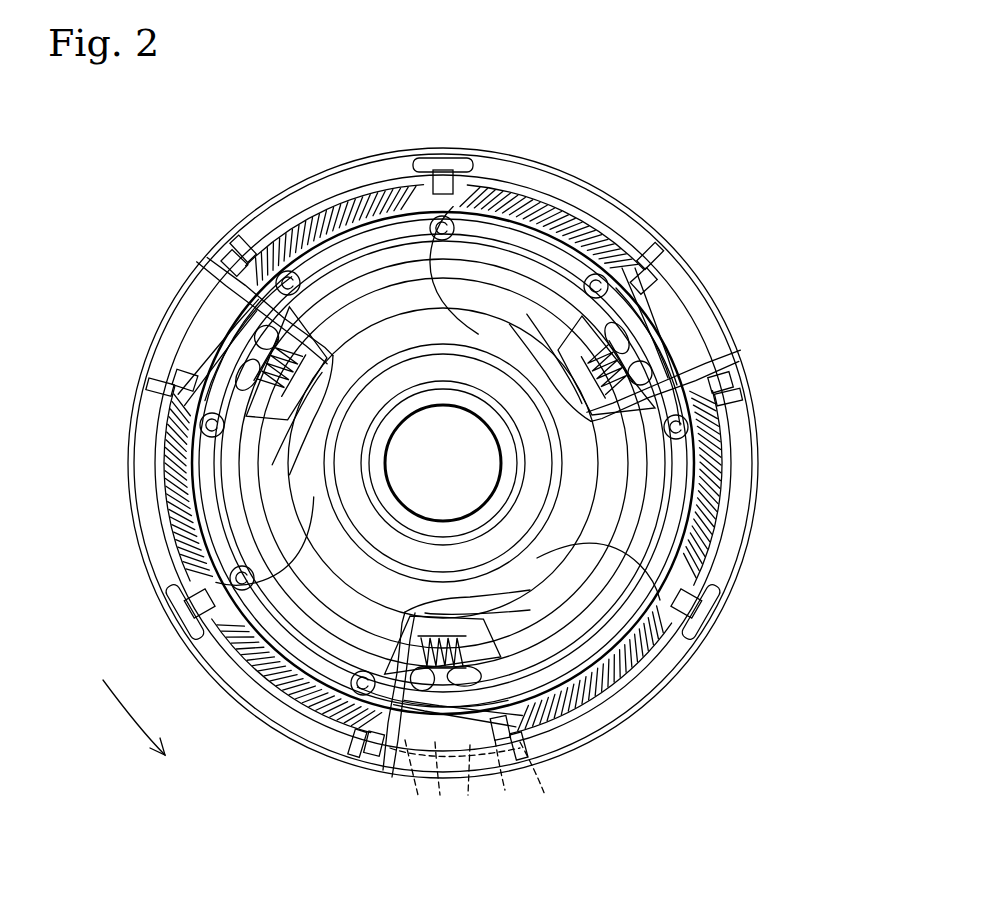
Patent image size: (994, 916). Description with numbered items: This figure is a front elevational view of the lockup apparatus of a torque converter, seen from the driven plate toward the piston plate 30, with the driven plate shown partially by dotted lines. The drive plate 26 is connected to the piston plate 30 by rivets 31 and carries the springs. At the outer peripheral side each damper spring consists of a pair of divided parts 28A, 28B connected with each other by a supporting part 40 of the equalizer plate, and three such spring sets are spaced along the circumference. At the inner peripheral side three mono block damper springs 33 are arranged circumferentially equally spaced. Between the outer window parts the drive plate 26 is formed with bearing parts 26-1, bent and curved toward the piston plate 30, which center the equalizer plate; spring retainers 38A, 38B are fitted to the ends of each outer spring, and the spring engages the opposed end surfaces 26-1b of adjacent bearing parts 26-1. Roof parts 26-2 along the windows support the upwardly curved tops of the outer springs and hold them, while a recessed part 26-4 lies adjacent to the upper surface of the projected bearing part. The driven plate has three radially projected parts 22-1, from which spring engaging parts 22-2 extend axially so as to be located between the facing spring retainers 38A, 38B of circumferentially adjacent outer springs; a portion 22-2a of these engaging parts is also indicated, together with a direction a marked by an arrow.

The drive plate 26 is at (616, 216).
The bearing part 26-1 is at (705, 340).
The opposed end surface of bearing part 26-1b is at (245, 235).
The roof part 26-2 is at (365, 190).
The recessed part 26-4 is at (238, 258).
The divided part of damper spring 28A is at (385, 205).
The divided part of damper spring 28B is at (555, 195).
The piston plate 30 is at (443, 463).
The rivet 31 is at (300, 292).
The damper spring 33 is at (300, 385).
The spring retainer 38A is at (300, 200).
The spring retainer 38B is at (672, 280).
The supporting part 40 is at (460, 165).
The radially projected part 22-1 is at (468, 791).
The spring engaging part 22-2 is at (471, 796).
The cover edge 22-2a is at (486, 799).
The rotation direction a is at (134, 717).